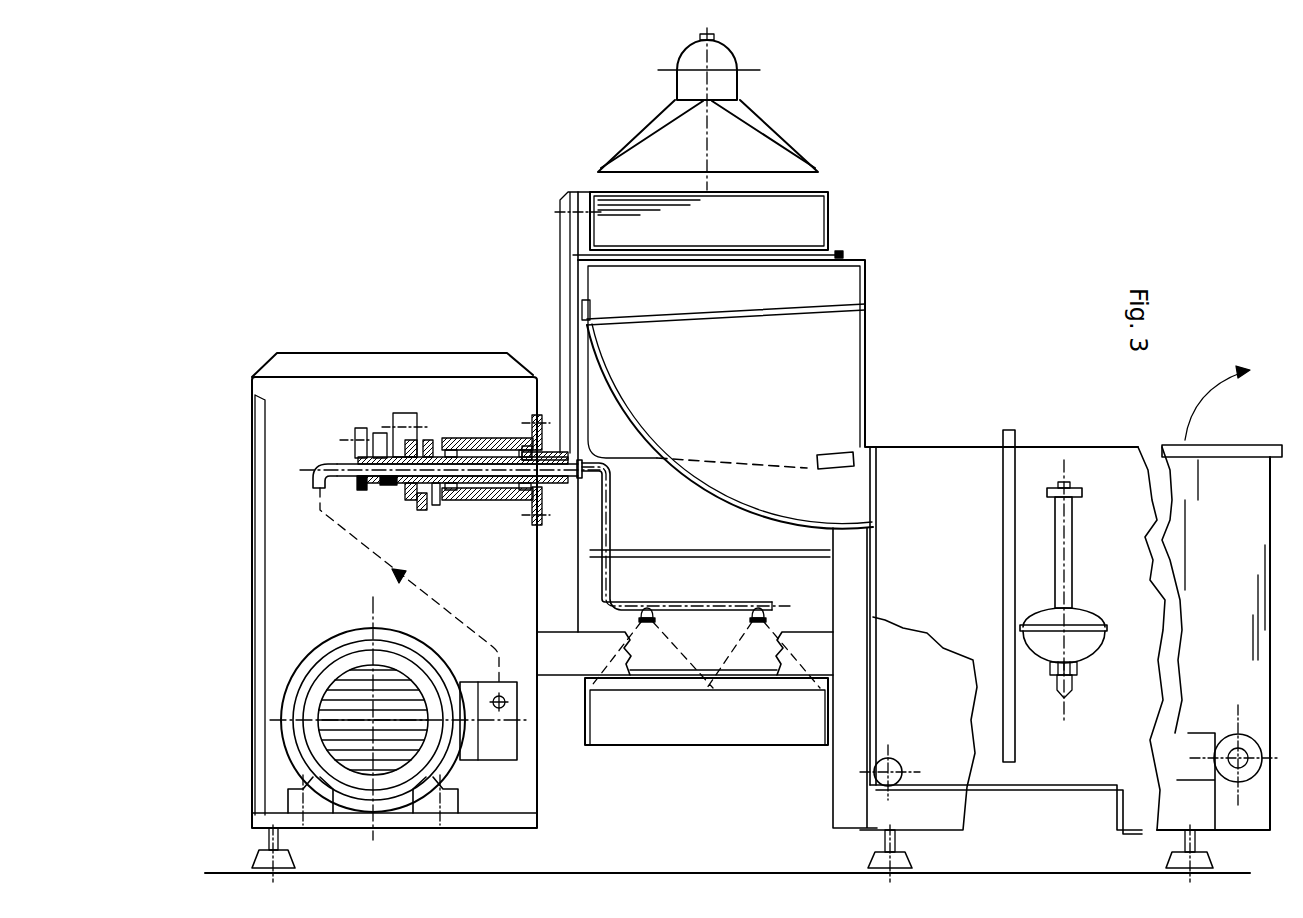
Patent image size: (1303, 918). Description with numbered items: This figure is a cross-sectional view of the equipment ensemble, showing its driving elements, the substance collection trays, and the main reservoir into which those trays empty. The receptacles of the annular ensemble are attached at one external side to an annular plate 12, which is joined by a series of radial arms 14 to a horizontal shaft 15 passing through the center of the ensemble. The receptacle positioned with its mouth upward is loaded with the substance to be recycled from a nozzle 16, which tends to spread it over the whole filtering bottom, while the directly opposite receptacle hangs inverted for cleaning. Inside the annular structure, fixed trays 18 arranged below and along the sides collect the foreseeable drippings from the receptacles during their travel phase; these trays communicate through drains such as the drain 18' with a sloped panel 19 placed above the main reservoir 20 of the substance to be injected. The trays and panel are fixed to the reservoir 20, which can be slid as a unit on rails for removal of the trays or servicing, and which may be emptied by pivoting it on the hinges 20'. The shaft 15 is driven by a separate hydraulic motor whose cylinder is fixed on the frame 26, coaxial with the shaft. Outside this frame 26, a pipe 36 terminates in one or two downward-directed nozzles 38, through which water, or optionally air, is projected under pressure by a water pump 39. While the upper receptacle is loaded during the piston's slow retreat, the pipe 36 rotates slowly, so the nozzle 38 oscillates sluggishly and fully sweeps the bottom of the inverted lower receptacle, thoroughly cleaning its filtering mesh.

The annular plate 12 is at (580, 222).
The radial arms 14 is at (572, 265).
The horizontal shaft 15 is at (556, 450).
The nozzle 16 is at (728, 126).
The trays 18 is at (800, 382).
The drain 18' is at (891, 414).
The sloped panel 19 is at (705, 487).
The main reservoir 20 is at (1081, 624).
The hinges 20' is at (1231, 752).
The frame 26 is at (310, 605).
The pipe 36 is at (328, 463).
The nozzles 38 is at (647, 622).
The water pump 39 is at (345, 702).